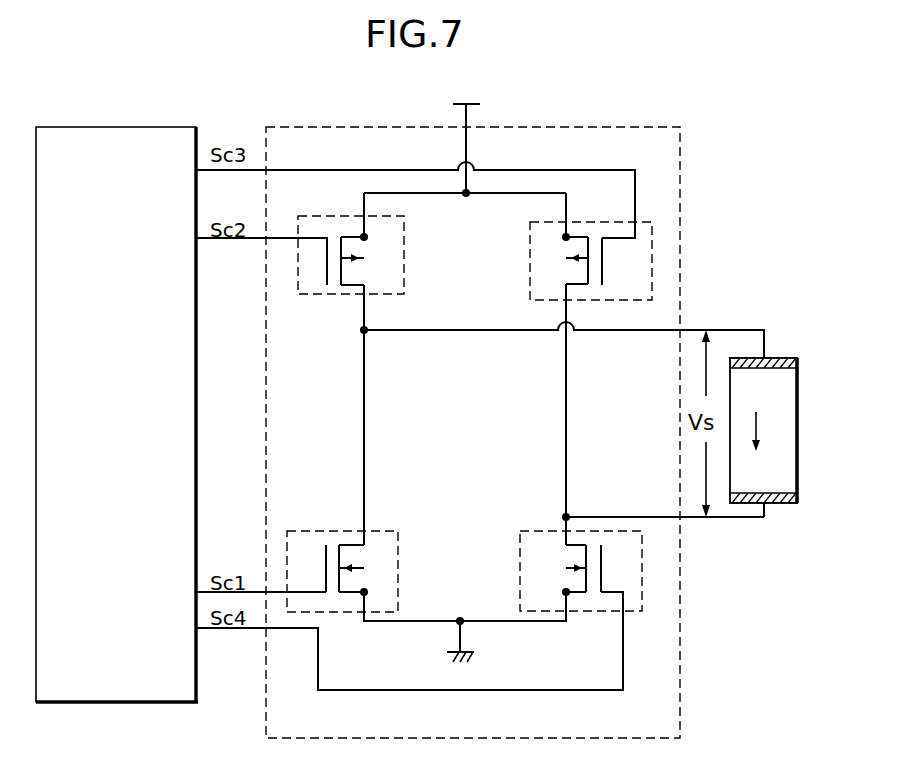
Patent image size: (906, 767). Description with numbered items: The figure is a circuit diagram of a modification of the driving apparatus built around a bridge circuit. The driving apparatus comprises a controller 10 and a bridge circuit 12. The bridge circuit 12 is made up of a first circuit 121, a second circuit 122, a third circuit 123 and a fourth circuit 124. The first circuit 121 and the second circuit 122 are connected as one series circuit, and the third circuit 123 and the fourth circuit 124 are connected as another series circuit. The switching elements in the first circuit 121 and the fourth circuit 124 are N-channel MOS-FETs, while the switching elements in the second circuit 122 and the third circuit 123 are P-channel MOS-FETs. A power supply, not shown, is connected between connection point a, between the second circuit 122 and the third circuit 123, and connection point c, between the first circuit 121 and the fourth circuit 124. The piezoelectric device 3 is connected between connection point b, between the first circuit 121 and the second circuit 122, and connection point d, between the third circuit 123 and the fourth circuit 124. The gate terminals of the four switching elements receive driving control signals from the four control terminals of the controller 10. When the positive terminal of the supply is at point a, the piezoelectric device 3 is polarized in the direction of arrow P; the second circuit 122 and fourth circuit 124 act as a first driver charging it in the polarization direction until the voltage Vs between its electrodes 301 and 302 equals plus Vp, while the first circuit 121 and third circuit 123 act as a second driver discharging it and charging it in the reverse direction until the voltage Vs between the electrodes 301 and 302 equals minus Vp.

The controller 10 is at (108, 127).
The bridge circuit 12 is at (600, 128).
The first circuit 121 is at (362, 531).
The second circuit 122 is at (405, 283).
The third circuit 123 is at (653, 272).
The fourth circuit 124 is at (518, 568).
The piezoelectric device 3 is at (793, 415).
The electrode 301 is at (800, 496).
The electrode 302 is at (784, 357).